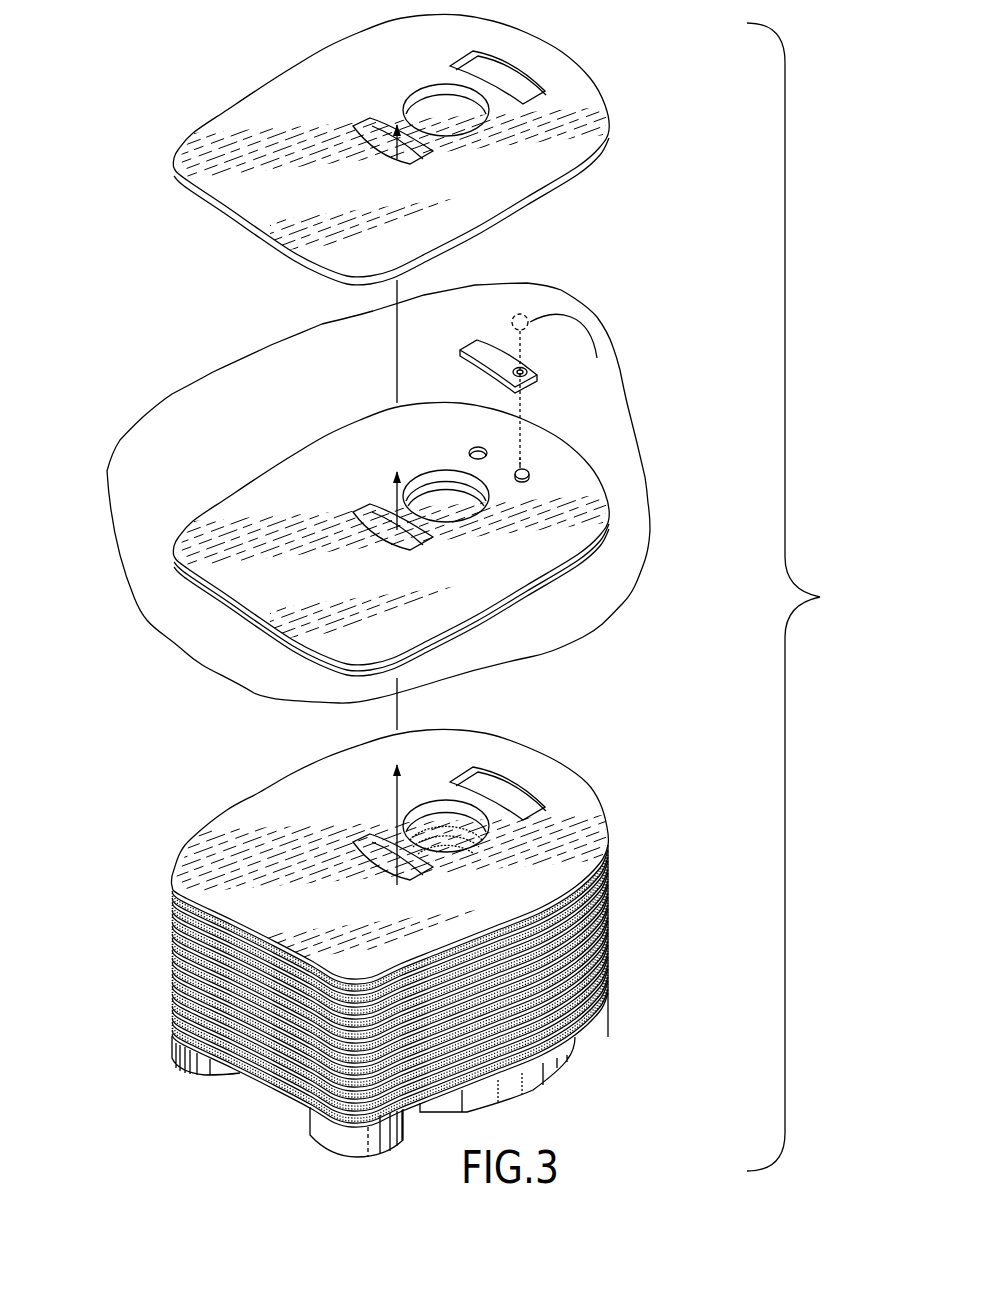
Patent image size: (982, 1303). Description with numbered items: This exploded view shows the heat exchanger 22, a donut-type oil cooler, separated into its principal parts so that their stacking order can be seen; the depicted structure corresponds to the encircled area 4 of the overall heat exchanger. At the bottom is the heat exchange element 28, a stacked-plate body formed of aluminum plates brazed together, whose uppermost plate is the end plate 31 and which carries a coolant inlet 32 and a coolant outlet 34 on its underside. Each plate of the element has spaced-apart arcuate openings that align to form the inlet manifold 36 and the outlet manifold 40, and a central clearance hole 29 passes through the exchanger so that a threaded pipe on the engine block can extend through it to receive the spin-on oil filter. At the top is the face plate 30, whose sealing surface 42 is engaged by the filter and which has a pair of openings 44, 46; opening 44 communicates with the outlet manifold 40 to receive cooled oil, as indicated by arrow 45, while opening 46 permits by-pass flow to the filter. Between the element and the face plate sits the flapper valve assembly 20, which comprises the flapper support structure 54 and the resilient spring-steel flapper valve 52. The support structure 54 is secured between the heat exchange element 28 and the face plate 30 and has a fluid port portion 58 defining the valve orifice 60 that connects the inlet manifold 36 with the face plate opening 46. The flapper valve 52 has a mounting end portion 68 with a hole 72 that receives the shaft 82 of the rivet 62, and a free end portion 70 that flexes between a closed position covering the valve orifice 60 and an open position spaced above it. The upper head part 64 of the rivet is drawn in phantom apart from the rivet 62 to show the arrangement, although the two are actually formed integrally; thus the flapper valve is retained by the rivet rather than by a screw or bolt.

The heat exchanger 4 is at (171, 395).
The flapper valve assembly 20 is at (175, 463).
The heat exchanger 22 is at (804, 597).
The heat exchange element 28 is at (449, 931).
The hole 29 is at (440, 837).
The top face plate 30 is at (434, 155).
The end plate 31 is at (445, 912).
The coolant inlet 32 is at (183, 1078).
The coolant outlet 34 is at (320, 1160).
The inlet manifold 36 is at (507, 790).
The outlet manifold 40 is at (363, 847).
The sealing surface 42 is at (287, 214).
The opening 44 is at (352, 117).
The arrow 45 is at (400, 787).
The opening 46 is at (524, 66).
The flapper valve 52 is at (512, 348).
The flapper support structure 54 is at (562, 592).
The fluid port portion 58 is at (460, 447).
The valve orifice 60 is at (475, 437).
The rivet 62 is at (538, 467).
The second upper head part 64 is at (571, 352).
The mounting end portion 68 is at (502, 385).
The free end portion 70 is at (462, 362).
The hole 72 is at (529, 363).
The pin shaft 82 is at (538, 460).